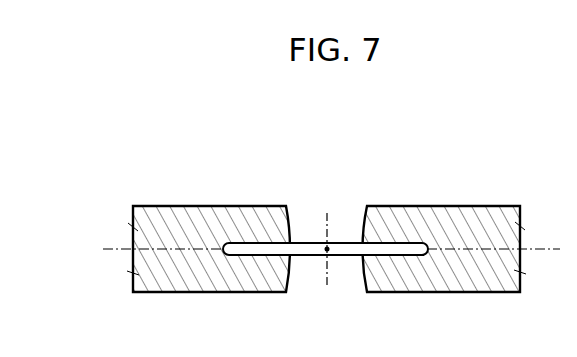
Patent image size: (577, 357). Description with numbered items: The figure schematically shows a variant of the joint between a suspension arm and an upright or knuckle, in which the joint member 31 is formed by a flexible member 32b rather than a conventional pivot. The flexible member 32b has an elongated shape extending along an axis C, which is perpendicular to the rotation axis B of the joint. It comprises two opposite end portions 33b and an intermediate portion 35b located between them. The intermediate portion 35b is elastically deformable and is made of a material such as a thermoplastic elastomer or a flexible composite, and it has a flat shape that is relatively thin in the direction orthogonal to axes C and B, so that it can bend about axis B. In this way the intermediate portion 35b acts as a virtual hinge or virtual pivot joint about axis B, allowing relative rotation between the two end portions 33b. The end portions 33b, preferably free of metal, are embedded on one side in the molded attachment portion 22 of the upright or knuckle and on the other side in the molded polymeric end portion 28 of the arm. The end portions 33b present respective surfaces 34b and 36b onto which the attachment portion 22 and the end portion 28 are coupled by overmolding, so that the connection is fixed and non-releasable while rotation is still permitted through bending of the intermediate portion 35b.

The attachment portion 22 is at (152, 207).
The end portion 28 is at (478, 207).
The joint member 31 is at (403, 262).
The flexible member 32b is at (247, 236).
The end portions 33b is at (238, 255).
The surface 34b is at (392, 236).
The intermediate portion 35b is at (348, 256).
The surface 36b is at (235, 236).
The rotation axis B is at (324, 251).
The axis C is at (108, 248).